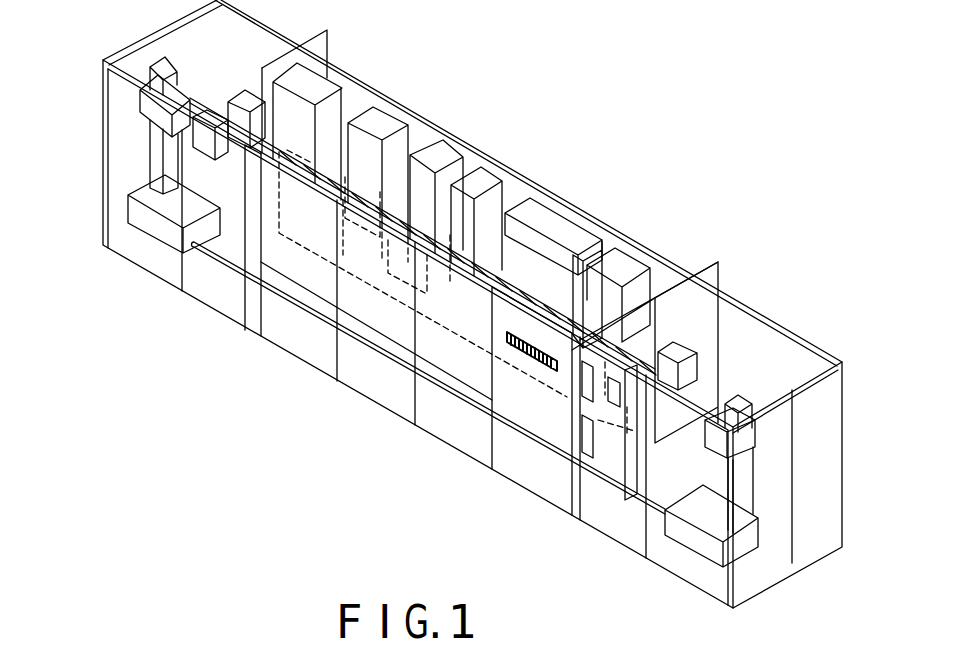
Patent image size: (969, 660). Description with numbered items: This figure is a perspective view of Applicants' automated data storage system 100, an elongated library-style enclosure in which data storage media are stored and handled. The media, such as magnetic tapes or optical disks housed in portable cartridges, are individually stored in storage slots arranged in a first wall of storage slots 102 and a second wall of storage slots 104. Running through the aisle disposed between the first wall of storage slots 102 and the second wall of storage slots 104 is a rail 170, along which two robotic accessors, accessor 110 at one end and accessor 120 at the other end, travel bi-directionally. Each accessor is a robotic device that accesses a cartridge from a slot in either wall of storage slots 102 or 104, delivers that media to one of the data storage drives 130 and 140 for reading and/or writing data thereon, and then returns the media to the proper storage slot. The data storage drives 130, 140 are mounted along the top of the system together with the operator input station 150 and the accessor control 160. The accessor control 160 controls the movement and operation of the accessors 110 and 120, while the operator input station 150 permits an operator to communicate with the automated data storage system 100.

The automated data storage system 100 is at (527, 507).
The first wall of storage slots 102 is at (342, 163).
The second wall of storage slots 104 is at (320, 282).
The accessor 110 is at (147, 118).
The accessor 120 is at (750, 445).
The data storage drive 130 is at (445, 155).
The data storage drive 140 is at (487, 177).
The operator input station 150 is at (385, 122).
The accessor control 160 is at (327, 85).
The rail 170 is at (387, 357).